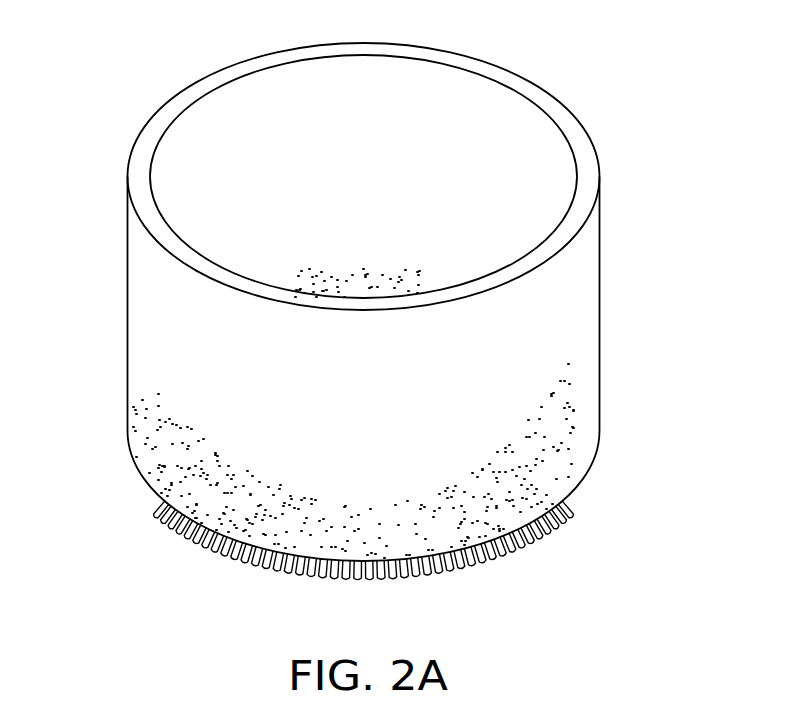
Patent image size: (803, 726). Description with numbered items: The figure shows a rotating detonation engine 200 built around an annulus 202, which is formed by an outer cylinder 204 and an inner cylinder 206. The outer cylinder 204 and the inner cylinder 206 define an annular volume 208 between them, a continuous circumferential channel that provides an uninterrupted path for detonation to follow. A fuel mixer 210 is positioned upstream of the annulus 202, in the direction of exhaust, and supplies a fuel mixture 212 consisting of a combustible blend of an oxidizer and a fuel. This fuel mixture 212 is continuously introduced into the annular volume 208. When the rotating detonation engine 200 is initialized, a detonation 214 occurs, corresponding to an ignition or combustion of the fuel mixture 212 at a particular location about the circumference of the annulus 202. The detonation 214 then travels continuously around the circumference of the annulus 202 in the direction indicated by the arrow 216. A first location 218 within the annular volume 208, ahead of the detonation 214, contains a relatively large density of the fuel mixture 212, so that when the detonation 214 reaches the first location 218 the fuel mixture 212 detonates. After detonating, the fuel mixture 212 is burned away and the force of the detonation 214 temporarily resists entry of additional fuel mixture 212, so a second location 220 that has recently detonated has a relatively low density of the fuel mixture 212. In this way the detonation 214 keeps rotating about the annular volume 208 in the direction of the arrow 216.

The rotating detonation engine 200 is at (686, 155).
The annulus 202 is at (120, 193).
The outer cylinder 204 is at (187, 267).
The inner cylinder 206 is at (283, 292).
The annular volume 208 is at (277, 295).
The fuel mixer 210 is at (551, 538).
The fuel mixture 212 is at (205, 536).
The detonation 214 is at (259, 518).
The arrow 216 is at (182, 602).
The first location 218 is at (228, 518).
The second location 220 is at (290, 503).